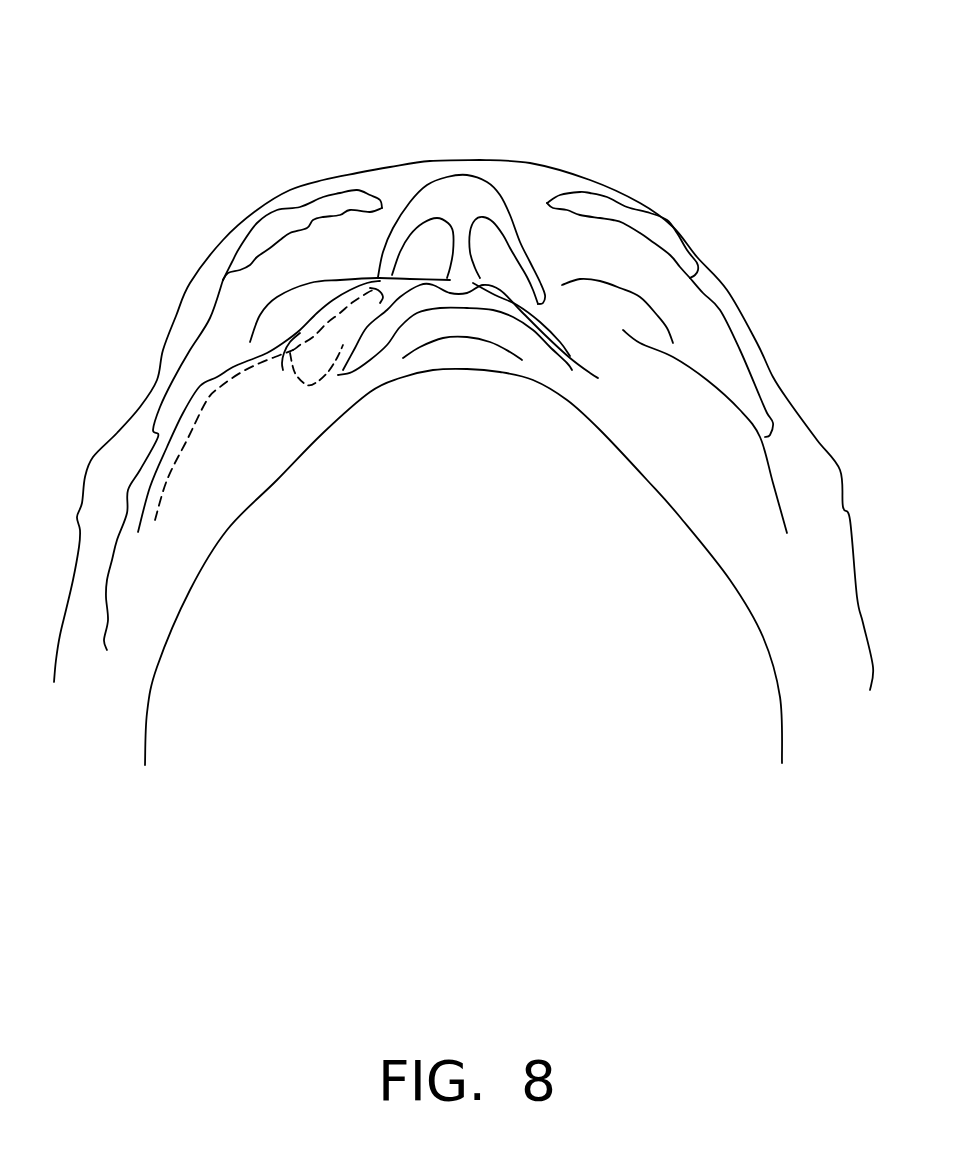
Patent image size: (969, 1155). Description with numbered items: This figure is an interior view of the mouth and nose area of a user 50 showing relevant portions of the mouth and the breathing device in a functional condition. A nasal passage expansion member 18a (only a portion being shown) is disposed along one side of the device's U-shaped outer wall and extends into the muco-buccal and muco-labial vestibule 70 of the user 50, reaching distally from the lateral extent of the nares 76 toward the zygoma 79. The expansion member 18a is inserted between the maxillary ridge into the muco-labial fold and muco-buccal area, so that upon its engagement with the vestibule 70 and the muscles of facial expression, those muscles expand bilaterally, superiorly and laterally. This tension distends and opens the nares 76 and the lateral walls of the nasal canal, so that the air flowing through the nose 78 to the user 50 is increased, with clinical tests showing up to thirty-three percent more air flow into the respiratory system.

The user 50 is at (207, 199).
The nasal passage expansion member 18a is at (353, 308).
The muco-buccal and muco-labial vestibule 70 is at (415, 278).
The nares 76 is at (437, 237).
The nose 78 is at (445, 182).
The zygoma 79 is at (213, 388).